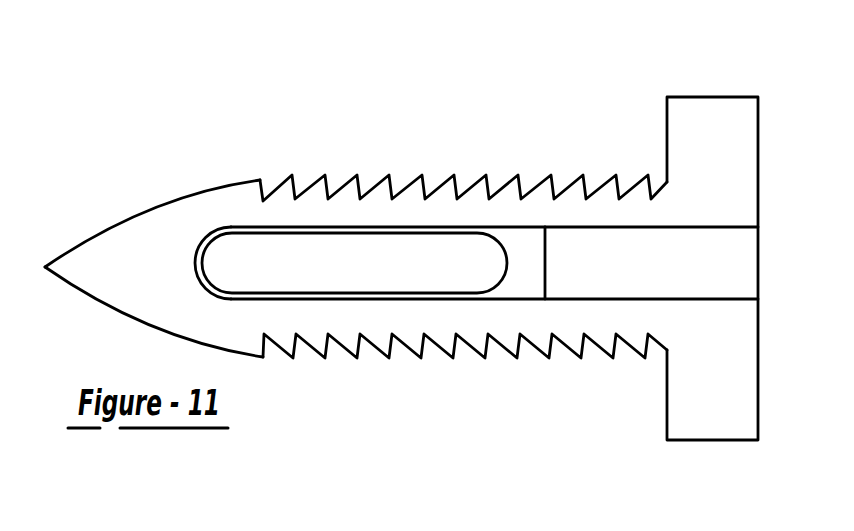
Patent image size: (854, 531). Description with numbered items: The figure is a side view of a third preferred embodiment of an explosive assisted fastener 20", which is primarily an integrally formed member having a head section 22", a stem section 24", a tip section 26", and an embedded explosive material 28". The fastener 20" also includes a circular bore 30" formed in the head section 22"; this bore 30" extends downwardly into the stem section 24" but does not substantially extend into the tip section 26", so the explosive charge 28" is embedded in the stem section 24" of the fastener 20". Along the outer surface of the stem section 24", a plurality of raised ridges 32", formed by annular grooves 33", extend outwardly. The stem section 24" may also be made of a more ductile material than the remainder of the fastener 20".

The explosive assisted fastener 20 is at (296, 144).
The head section 22 is at (702, 97).
The stem section 24 is at (430, 180).
The tip section 26 is at (130, 218).
The embedded explosive material 28 is at (218, 268).
The circular bore 30 is at (476, 263).
The raised ridges 32 is at (467, 343).
The annular grooves 33 is at (552, 146).